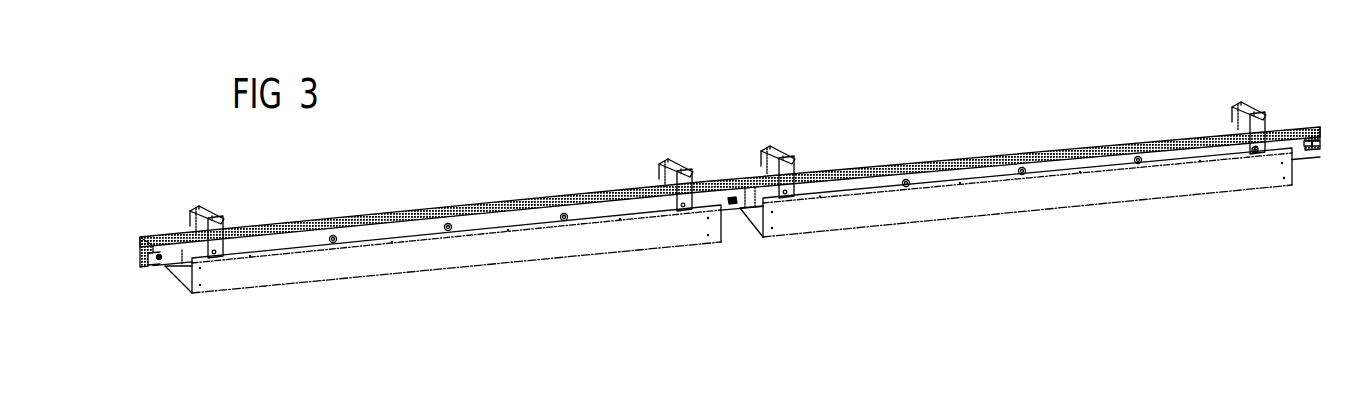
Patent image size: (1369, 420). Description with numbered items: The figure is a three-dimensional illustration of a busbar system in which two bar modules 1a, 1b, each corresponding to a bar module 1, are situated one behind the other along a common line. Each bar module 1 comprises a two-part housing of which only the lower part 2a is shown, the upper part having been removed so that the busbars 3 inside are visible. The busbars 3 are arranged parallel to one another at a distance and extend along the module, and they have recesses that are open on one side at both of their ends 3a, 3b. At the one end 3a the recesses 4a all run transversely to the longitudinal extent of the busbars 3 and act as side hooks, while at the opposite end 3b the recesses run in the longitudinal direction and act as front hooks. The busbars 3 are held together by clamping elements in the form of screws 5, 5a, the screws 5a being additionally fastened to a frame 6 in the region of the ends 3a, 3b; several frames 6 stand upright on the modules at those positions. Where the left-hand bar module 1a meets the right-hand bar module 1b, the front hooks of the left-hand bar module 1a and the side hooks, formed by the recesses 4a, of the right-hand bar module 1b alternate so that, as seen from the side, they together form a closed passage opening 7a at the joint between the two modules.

The bar module 1 is at (642, 124).
The left-hand-side bar module 1a is at (487, 178).
The right-hand-side bar module 1b is at (1032, 125).
The lower part of the housing 2a is at (453, 258).
The busbar 3 is at (730, 186).
The first end of the busbar 3a is at (147, 211).
The second end of the busbar 3b is at (1308, 96).
The recess (side hook) 4a is at (160, 262).
The screw 5 is at (335, 244).
The screw fastened to the frame 5a is at (1255, 153).
The frame 6 is at (213, 217).
The closed passage opening 7a is at (733, 204).